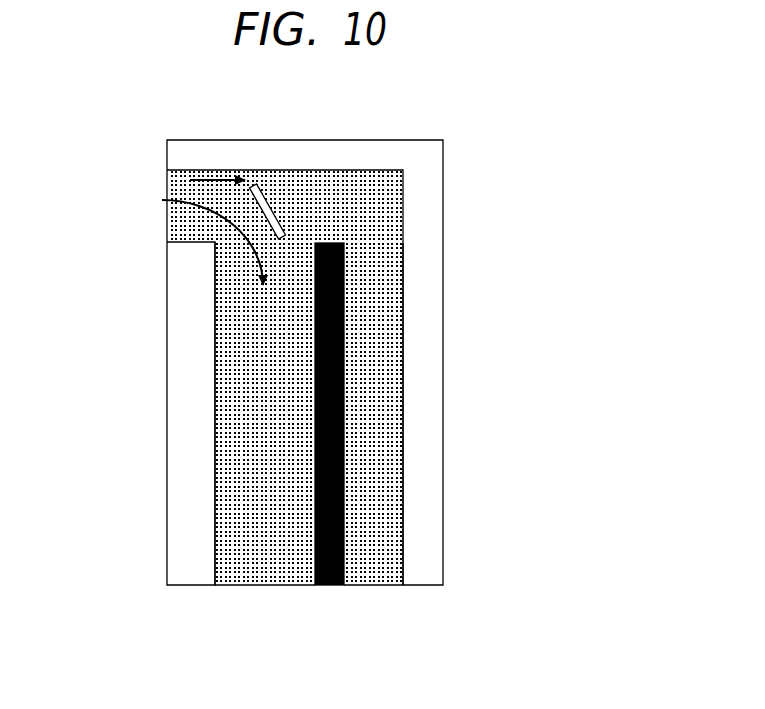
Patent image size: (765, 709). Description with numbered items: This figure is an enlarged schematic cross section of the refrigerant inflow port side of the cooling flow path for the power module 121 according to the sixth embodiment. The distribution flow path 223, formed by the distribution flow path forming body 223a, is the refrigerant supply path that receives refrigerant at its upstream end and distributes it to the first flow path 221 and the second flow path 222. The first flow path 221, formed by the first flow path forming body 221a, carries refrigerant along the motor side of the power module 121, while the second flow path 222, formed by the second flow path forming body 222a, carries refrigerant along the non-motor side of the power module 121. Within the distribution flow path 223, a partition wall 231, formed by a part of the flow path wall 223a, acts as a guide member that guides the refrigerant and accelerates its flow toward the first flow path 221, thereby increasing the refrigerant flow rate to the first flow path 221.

The power module 121 is at (328, 585).
The first flow path 221 is at (253, 573).
The first flow path forming body 221a is at (178, 435).
The second flow path 222 is at (380, 573).
The second flow path forming body 222a is at (432, 436).
The distribution flow path 223 is at (368, 202).
The distribution flow path forming body 223a is at (227, 157).
The partition wall 231 is at (265, 207).